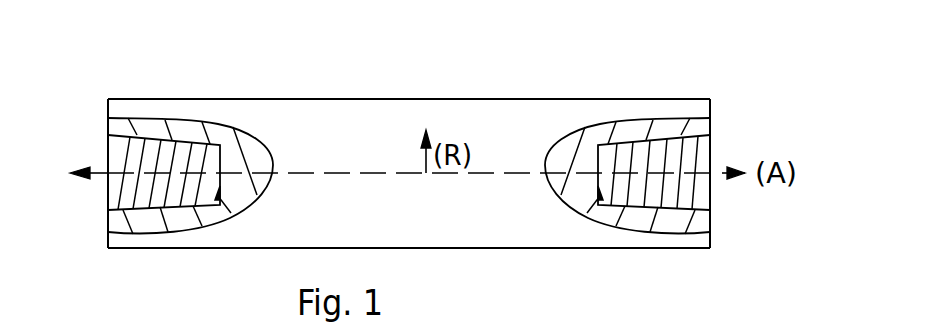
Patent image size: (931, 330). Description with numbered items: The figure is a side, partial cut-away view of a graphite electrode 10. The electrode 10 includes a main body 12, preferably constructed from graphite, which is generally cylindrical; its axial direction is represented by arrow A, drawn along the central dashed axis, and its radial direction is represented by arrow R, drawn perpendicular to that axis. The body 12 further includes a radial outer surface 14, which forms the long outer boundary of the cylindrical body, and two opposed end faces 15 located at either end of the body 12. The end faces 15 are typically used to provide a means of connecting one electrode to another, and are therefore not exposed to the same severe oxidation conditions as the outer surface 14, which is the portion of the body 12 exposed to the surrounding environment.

The graphite electrode 10 is at (509, 68).
The main body 12 is at (400, 99).
The radial outer surface 14 is at (437, 228).
The end faces 15 is at (100, 116).